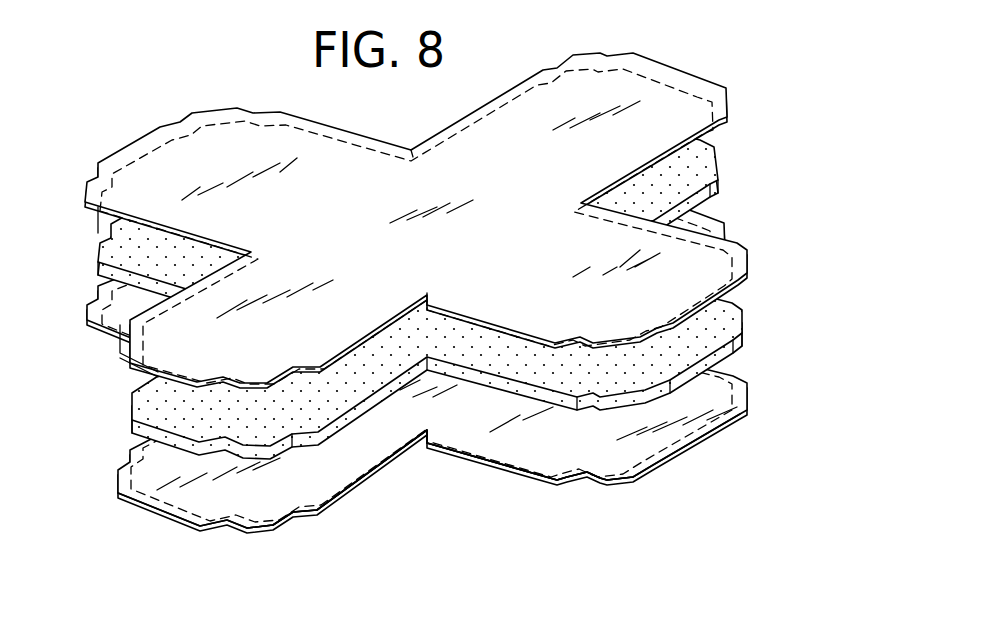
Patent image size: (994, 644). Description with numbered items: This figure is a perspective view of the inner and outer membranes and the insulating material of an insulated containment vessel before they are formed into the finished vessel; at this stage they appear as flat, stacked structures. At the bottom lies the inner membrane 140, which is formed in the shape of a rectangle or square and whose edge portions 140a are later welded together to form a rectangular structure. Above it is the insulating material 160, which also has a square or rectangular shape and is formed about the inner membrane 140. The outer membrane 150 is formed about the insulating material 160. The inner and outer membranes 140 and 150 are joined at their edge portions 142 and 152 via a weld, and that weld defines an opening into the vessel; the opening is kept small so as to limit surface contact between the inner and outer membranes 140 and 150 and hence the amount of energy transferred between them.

The inner membrane 140 is at (718, 402).
The edge portions of the inner membrane 140a is at (612, 473).
The edge portion of the inner membrane 142 is at (720, 432).
The outer membrane 150 is at (718, 265).
The edge portion of the outer membrane 152 is at (676, 74).
The insulating material 160 is at (722, 329).